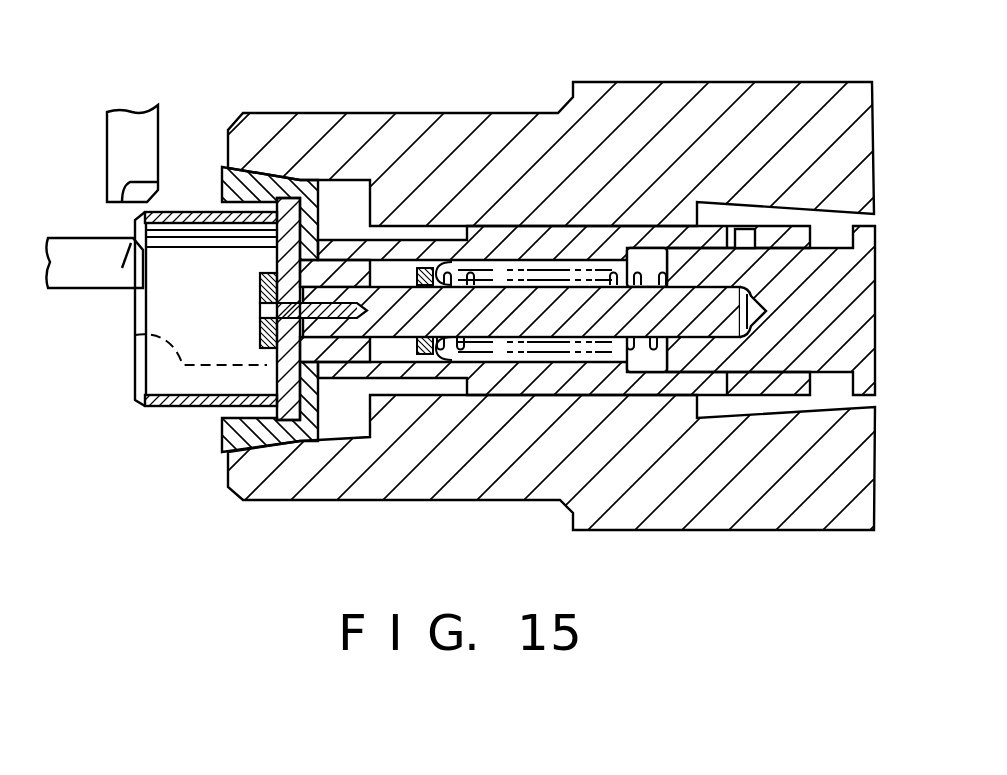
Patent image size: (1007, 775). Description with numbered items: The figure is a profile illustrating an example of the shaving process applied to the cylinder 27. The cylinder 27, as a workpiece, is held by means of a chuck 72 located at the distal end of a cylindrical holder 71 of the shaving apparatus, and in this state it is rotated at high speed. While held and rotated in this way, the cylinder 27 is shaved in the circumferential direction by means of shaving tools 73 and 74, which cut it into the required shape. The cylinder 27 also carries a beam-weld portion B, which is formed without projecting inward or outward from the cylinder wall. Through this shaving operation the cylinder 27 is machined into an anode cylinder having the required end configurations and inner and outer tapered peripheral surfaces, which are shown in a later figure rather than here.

The cylindrical holder 71 is at (497, 153).
The chuck 72 is at (268, 185).
The shaving tool 73 is at (122, 147).
The shaving tool 74 is at (63, 270).
The cylinder 27 is at (163, 406).
The beam-weld portion B is at (135, 335).